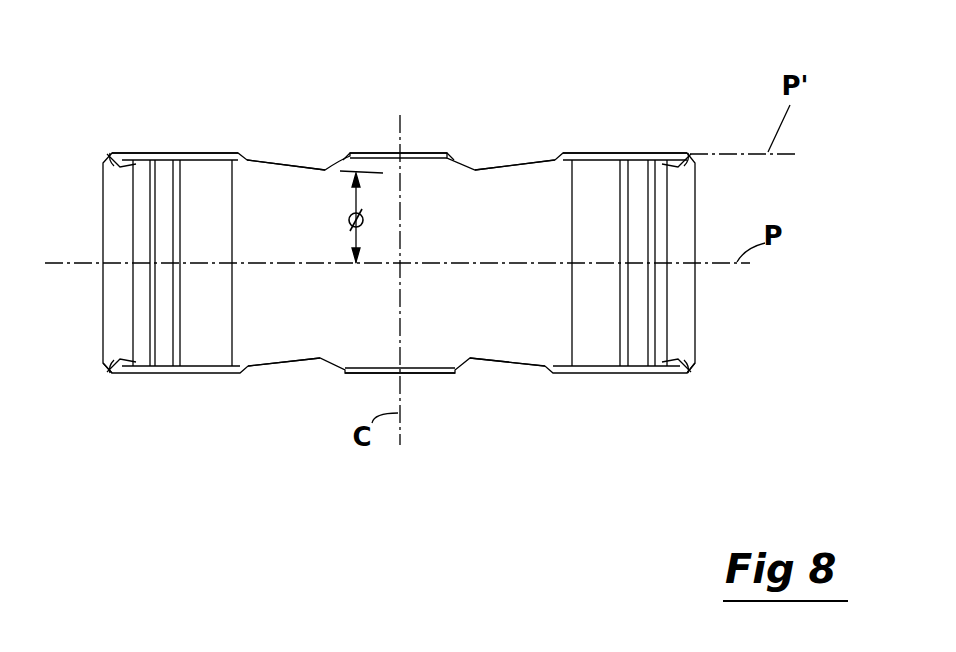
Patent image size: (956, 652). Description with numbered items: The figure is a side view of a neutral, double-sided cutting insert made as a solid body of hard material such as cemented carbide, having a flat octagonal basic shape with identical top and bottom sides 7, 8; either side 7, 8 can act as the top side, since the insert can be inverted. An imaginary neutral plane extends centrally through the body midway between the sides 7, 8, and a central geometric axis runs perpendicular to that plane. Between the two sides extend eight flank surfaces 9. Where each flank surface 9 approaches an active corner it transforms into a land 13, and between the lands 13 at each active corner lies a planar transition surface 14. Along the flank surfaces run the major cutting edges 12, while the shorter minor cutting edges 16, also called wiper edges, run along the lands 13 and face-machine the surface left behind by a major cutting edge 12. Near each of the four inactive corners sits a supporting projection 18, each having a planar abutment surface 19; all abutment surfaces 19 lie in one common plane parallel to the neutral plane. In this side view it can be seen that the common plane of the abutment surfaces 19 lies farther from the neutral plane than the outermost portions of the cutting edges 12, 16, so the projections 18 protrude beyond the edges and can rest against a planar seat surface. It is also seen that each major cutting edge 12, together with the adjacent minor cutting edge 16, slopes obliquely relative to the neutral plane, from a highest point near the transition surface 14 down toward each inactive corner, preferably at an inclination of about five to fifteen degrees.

The top side 7 is at (260, 108).
The bottom side 8 is at (548, 418).
The flank surface 9 is at (454, 332).
The major cutting edge 12 is at (288, 163).
The land 13 is at (594, 352).
The transition surface 14 is at (160, 365).
The minor cutting edge 16 is at (214, 162).
The supporting projection 18 is at (128, 151).
The abutment surface 19 is at (195, 152).